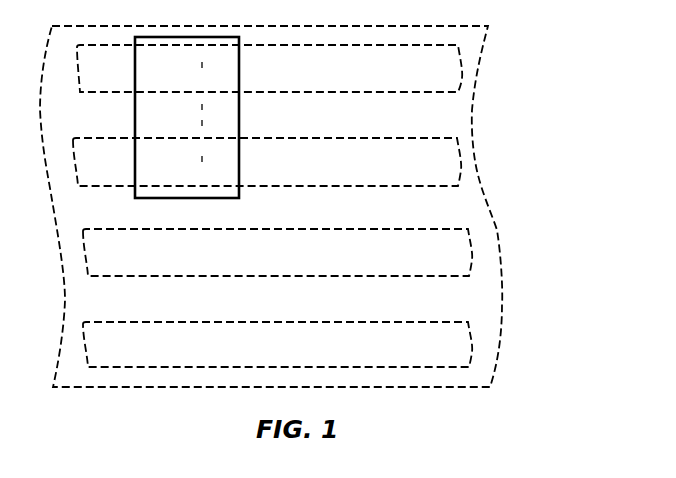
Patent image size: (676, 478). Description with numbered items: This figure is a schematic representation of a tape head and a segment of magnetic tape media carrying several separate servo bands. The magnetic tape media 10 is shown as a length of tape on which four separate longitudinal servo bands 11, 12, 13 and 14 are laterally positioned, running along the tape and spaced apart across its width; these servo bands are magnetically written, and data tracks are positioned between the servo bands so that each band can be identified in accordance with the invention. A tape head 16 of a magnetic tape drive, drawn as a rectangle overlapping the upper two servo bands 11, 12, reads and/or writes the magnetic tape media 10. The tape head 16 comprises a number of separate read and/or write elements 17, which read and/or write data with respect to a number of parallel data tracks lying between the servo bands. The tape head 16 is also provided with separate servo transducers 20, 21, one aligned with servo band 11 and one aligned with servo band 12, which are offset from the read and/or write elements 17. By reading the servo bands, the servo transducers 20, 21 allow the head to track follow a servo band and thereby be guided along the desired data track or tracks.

The magnetic tape media 10 is at (420, 33).
The servo band 11 is at (447, 70).
The servo band 12 is at (447, 162).
The servo band 13 is at (458, 252).
The servo band 14 is at (458, 343).
The tape head 16 is at (212, 37).
The read and/or write elements 17 is at (202, 107).
The servo transducer 20 is at (202, 65).
The servo transducer 21 is at (202, 159).